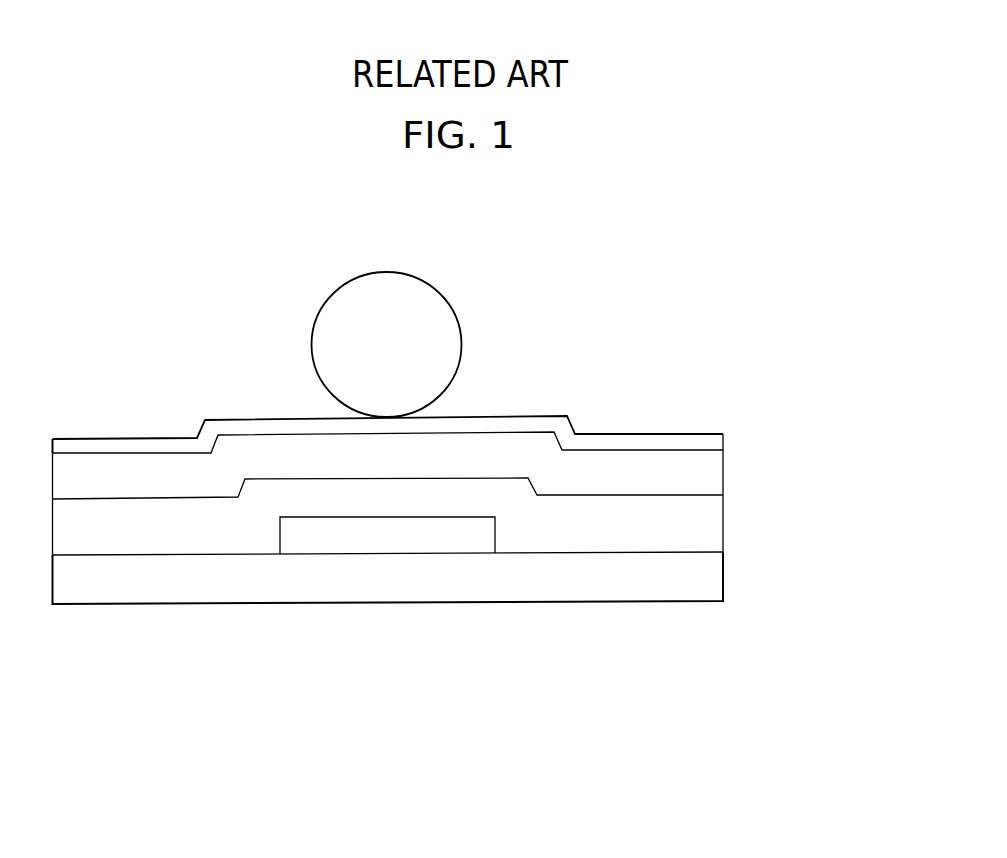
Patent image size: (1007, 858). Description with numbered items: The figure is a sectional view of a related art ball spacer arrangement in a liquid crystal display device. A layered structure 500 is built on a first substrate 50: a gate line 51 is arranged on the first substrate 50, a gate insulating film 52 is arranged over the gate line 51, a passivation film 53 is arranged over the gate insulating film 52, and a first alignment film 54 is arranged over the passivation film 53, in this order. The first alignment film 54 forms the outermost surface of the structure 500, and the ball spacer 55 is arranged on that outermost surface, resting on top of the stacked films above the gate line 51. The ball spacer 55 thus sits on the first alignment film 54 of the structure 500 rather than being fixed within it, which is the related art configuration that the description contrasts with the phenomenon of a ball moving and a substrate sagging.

The first substrate 50 is at (710, 572).
The gate line 51 is at (397, 542).
The gate insulating film 52 is at (710, 518).
The passivation film 53 is at (710, 473).
The first alignment film 54 is at (710, 442).
The ball spacer 55 is at (447, 343).
The thin film transistor stack 500 is at (847, 442).